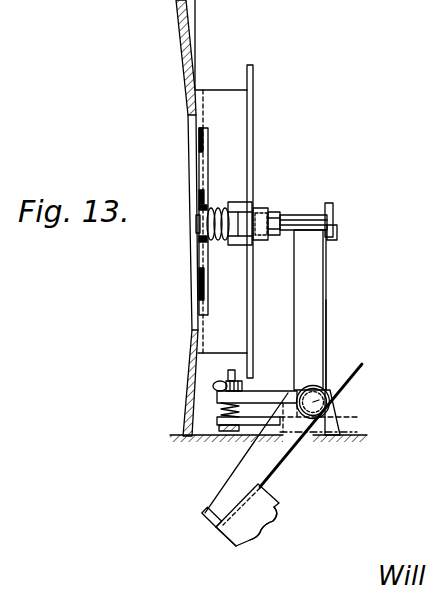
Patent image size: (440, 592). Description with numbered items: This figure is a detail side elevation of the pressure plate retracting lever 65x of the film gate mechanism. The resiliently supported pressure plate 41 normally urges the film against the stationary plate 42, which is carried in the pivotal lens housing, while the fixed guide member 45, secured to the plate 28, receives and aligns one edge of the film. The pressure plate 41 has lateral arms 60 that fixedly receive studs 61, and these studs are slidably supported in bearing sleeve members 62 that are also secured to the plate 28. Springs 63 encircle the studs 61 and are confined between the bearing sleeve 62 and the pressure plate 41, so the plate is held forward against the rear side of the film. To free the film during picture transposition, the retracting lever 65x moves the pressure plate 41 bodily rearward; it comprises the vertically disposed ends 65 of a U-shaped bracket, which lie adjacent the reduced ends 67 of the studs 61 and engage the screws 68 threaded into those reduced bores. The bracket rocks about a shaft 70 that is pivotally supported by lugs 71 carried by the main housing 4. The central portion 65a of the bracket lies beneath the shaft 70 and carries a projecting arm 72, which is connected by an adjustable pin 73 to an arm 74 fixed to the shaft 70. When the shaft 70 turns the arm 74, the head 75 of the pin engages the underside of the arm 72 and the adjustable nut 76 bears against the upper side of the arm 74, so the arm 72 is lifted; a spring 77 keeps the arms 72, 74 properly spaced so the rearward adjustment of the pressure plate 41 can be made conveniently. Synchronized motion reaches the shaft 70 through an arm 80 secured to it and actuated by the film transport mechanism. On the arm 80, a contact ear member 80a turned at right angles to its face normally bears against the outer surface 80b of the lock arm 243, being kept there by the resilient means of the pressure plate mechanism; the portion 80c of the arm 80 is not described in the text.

The main housing 4 is at (357, 443).
The stationary plate 42 is at (183, 48).
The fixed guide member 45 is at (222, 95).
The plate 28 is at (253, 78).
The pressure plate 41 is at (198, 137).
The lateral arms 60 is at (198, 240).
The springs 63 is at (210, 238).
The bearing sleeve member 62 is at (237, 203).
The reduced ends of the studs 67 is at (292, 212).
The studs 61 is at (282, 236).
The screws 68 is at (333, 210).
The vertically disposed ends of the U-shaped bracket 65 is at (320, 272).
The pressure plate retracting lever 65x is at (329, 336).
The central portion of the U-shaped bracket 65a is at (338, 428).
The adjustable pin 73 is at (227, 376).
The adjustable nut 76 is at (215, 387).
The arm 74 is at (270, 393).
The spring 77 is at (218, 408).
The projecting arm 72 is at (232, 428).
The head of the pin 75 is at (203, 440).
The shaft 70 is at (327, 397).
The lugs 71 is at (335, 413).
The arm 80 is at (272, 465).
The tool shank 80c is at (238, 500).
The contact ear member 80a is at (212, 520).
The outer surface of the lock arm 80b is at (215, 531).
The lock arm 243 is at (263, 525).